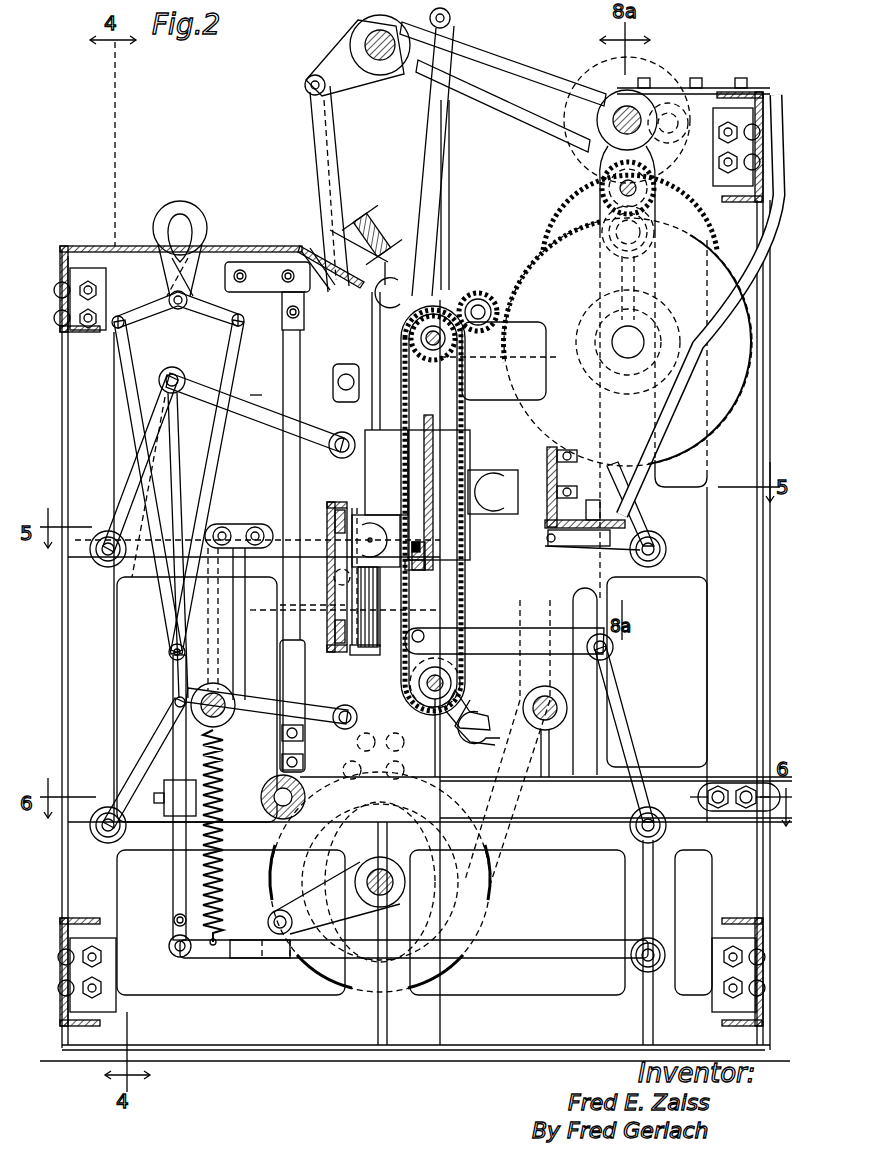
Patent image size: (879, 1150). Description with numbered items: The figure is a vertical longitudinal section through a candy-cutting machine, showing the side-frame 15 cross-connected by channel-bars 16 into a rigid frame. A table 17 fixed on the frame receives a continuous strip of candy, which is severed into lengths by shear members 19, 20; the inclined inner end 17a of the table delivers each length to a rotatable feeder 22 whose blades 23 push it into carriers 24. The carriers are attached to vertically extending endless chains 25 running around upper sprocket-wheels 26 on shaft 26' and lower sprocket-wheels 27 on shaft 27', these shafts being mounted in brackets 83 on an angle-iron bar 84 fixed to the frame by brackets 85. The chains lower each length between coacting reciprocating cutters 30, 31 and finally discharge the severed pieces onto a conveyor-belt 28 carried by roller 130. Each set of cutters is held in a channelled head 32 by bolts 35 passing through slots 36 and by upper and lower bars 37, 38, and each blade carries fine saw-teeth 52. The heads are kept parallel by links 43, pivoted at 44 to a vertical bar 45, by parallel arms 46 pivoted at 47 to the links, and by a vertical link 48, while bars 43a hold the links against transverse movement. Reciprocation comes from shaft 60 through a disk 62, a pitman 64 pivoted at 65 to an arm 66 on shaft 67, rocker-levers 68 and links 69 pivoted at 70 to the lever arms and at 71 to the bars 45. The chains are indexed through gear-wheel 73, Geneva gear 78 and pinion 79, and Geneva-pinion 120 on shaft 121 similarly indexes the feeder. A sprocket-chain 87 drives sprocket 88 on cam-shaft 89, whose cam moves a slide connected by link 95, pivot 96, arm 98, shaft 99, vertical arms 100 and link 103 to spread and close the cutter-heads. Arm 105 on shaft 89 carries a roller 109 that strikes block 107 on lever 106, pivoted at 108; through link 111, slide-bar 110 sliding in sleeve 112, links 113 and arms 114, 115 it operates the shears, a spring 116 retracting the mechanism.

The side-frame 15 is at (112, 421).
The channel-bars 16 is at (60, 262).
The table 17 is at (268, 246).
The inclined inner end of table 17a is at (312, 250).
The shear member 19 is at (160, 240).
The shear member 20 is at (192, 238).
The rotatable feeder 22 is at (356, 222).
The blades 23 is at (392, 282).
The carriers 24 is at (436, 314).
The endless chains 25 is at (466, 416).
The upper sprocket-wheels 26 is at (451, 316).
The shaft 26' is at (500, 363).
The lower sprocket-wheels 27 is at (455, 713).
The shaft 27' is at (470, 728).
The conveyor-belt 28 is at (604, 778).
The cutters 30 is at (417, 495).
The cutters 31 is at (363, 607).
The channelled head 32 is at (420, 540).
The bolts 35 is at (346, 522).
The open-ended slots 36 is at (350, 650).
The upper bar 37 is at (328, 512).
The lower bar 38 is at (420, 566).
The parallel links 43 is at (278, 412).
The bars 43a is at (290, 386).
The pivots 44 is at (344, 458).
The vertical bar 45 is at (330, 700).
The parallel arms 46 is at (124, 505).
The pivots 47 is at (180, 374).
The vertical link 48 is at (178, 446).
The saw-teeth 52 is at (376, 640).
The shaft 60 is at (614, 108).
The disk 62 is at (652, 72).
The pitman 64 is at (508, 124).
The pivot 65 is at (450, 148).
The arm 66 is at (462, 66).
The shaft 67 is at (372, 34).
The rocker-levers 68 is at (336, 58).
The links 69 is at (312, 134).
The pivots 70 is at (305, 84).
The pivots 71 is at (356, 382).
The gear-wheel 73 is at (544, 216).
The Geneva gear 78 is at (556, 268).
The pinion 79 is at (478, 311).
The brackets 83 is at (548, 465).
The angle-iron bar 84 is at (592, 504).
The brackets 85 is at (758, 234).
The sprocket-chain 87 is at (490, 780).
The sprocket 88 is at (420, 876).
The shaft 89 is at (440, 894).
The link 95 is at (358, 746).
The pivot 96 is at (344, 771).
The arm 98 is at (552, 742).
The shaft 99 is at (228, 724).
The vertical arms 100 is at (224, 625).
The link 103 is at (240, 524).
The arm 105 is at (312, 906).
The lever 106 is at (520, 958).
The block 107 is at (288, 958).
The pivot 108 is at (636, 962).
The roller 109 is at (268, 918).
The slide-bar 110 is at (172, 880).
The link 111 is at (170, 936).
The sleeve 112 is at (178, 820).
The links 113 is at (232, 340).
The arm 114 is at (205, 310).
The arm 115 is at (145, 312).
The spring 116 is at (226, 878).
The Geneva-pinion 120 is at (600, 178).
The shaft 121 is at (620, 190).
The roller 130 is at (272, 782).